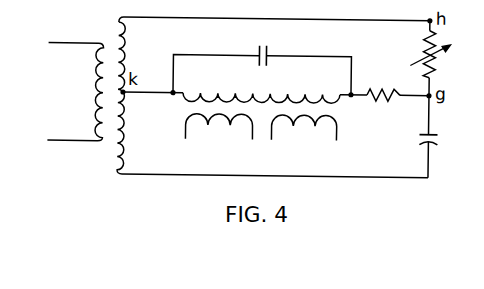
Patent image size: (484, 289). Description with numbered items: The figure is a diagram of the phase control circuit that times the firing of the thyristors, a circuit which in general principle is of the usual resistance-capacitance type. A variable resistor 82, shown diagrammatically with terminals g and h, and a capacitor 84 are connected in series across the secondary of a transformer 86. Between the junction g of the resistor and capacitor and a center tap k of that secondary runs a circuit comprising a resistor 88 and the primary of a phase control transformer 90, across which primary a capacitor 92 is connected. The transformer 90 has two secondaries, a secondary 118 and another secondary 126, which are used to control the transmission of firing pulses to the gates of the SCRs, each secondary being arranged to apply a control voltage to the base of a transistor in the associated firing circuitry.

The variable resistor 82 is at (435, 54).
The capacitor 84 is at (443, 139).
The transformer 86 is at (103, 148).
The resistor 88 is at (383, 106).
The phase control transformer 90 is at (277, 96).
The capacitor 92 is at (262, 64).
The secondary 118 is at (218, 131).
The secondary 126 is at (303, 131).